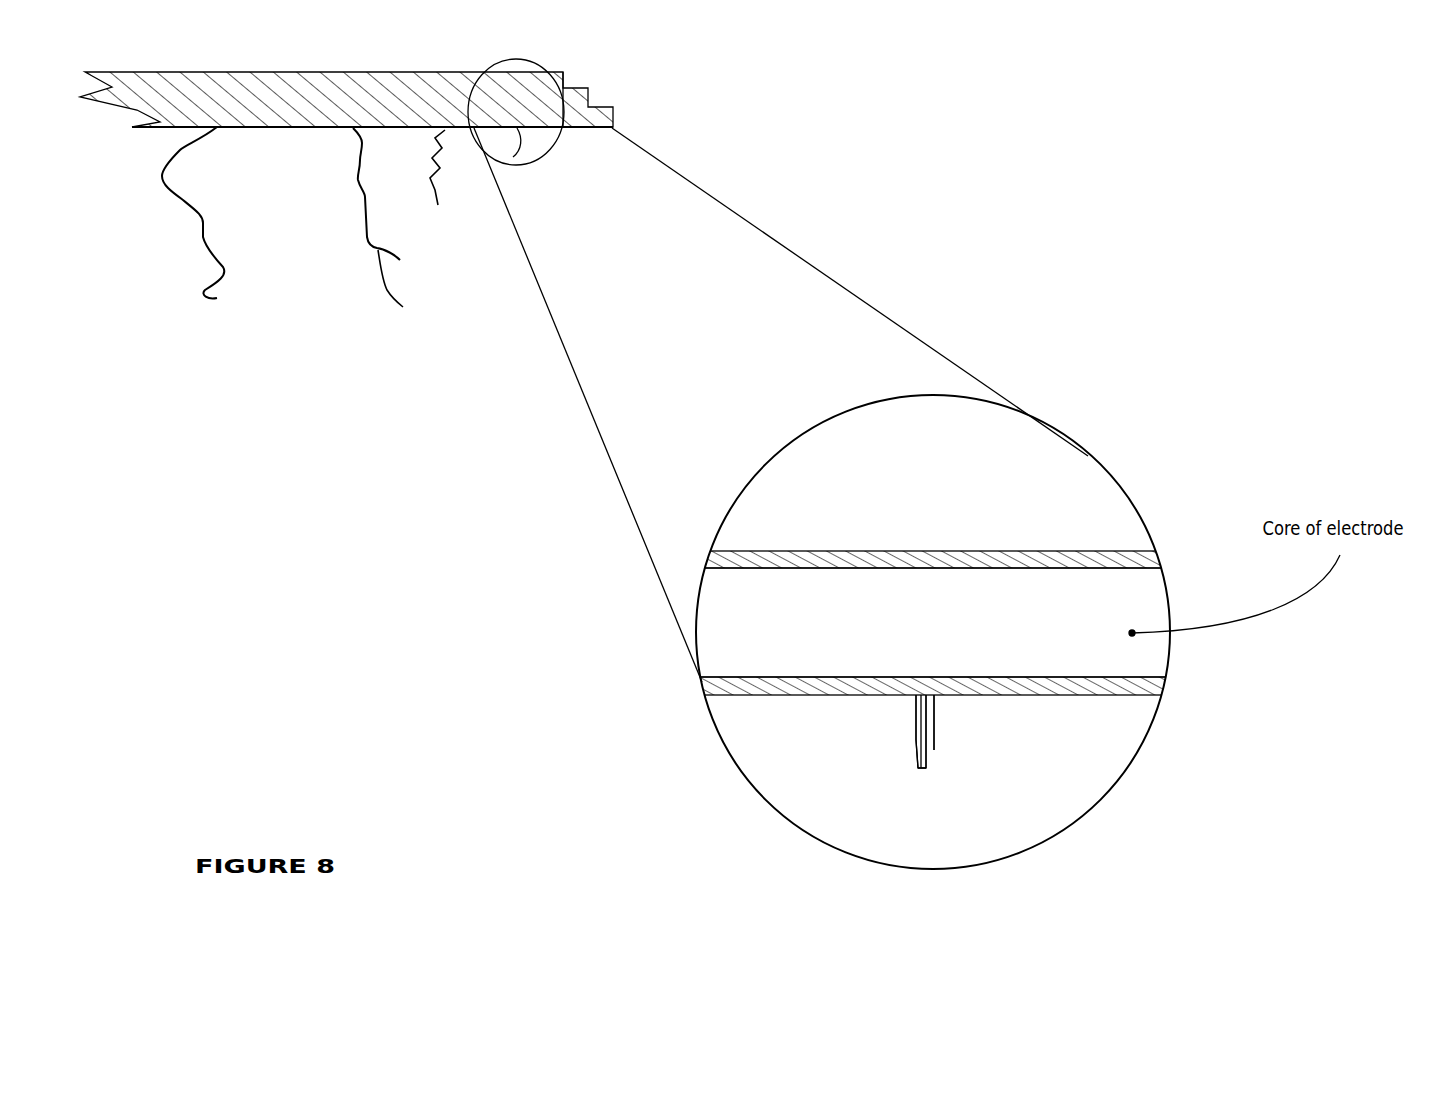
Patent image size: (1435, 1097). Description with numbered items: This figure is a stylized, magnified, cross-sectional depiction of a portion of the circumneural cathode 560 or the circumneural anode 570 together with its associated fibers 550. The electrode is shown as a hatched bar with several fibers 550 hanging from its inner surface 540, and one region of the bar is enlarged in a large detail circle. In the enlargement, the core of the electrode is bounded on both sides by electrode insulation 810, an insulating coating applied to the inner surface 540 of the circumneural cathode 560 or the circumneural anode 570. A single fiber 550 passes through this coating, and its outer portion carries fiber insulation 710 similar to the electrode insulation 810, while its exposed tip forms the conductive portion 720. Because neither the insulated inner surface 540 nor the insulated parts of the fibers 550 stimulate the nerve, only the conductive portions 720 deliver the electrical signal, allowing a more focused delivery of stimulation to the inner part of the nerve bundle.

The inner surface 540 is at (313, 128).
The fibers 550 is at (1205, 802).
The circumneural cathode 560 is at (622, 92).
The circumneural anode 570 is at (915, 516).
The insulation 710 is at (915, 728).
The conductive portions 720 is at (918, 758).
The electrode insulation 810 is at (1270, 772).